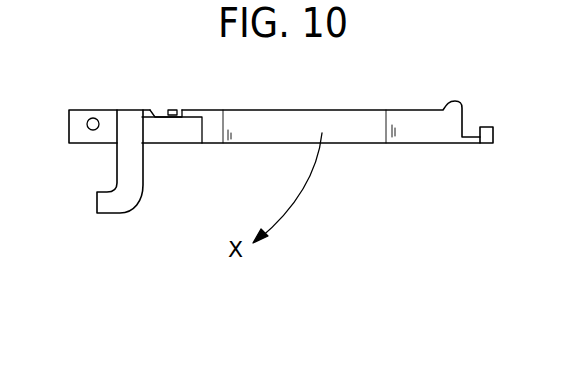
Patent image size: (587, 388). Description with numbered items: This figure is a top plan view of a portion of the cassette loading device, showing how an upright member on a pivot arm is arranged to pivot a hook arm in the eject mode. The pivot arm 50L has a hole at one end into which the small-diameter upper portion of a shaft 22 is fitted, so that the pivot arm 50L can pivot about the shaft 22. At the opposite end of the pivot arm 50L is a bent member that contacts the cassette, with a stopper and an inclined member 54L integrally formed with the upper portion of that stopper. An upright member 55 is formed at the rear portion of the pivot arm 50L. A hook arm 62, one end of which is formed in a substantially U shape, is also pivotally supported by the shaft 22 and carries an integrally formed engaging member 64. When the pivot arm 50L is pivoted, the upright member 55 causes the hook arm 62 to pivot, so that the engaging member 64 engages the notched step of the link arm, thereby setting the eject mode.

The shaft 22 is at (93, 117).
The upright member 55 is at (170, 109).
The hook arm 62 is at (157, 133).
The engaging member 64 is at (125, 193).
The pivot arm 50L is at (246, 112).
The inclined member 54L is at (483, 127).